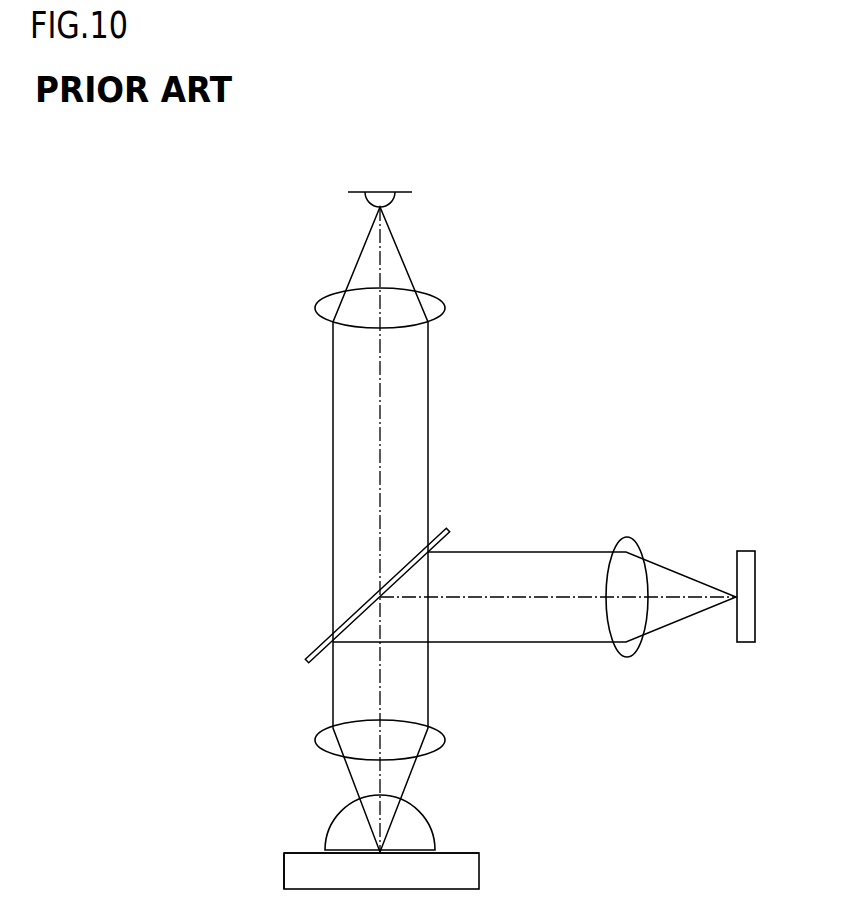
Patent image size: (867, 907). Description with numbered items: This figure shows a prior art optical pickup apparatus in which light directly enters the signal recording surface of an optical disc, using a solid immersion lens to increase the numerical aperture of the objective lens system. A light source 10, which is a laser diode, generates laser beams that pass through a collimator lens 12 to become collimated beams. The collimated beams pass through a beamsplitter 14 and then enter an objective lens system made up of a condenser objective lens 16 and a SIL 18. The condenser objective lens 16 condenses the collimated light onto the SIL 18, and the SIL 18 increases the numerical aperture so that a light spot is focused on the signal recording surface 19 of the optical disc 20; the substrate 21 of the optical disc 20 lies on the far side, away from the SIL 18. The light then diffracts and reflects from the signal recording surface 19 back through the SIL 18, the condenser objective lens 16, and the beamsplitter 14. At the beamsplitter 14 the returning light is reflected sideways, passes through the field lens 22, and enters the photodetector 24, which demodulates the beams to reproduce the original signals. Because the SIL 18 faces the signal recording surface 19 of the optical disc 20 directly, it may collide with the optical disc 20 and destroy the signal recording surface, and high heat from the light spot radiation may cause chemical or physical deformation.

The light source 10 is at (382, 191).
The collimator lens 12 is at (409, 327).
The beamsplitter 14 is at (449, 527).
The condenser objective lens 16 is at (445, 738).
The solid immersion lens (SIL) 18 is at (428, 822).
The signal recording surface 19 is at (283, 853).
The optical disc 20 is at (483, 869).
The substrate 21 is at (284, 878).
The field lens 22 is at (632, 542).
The photodetector 24 is at (745, 551).